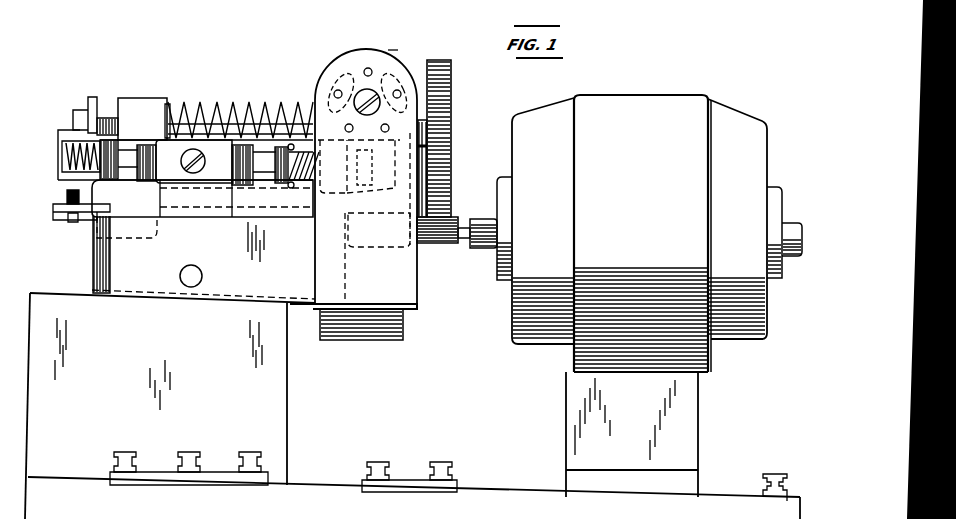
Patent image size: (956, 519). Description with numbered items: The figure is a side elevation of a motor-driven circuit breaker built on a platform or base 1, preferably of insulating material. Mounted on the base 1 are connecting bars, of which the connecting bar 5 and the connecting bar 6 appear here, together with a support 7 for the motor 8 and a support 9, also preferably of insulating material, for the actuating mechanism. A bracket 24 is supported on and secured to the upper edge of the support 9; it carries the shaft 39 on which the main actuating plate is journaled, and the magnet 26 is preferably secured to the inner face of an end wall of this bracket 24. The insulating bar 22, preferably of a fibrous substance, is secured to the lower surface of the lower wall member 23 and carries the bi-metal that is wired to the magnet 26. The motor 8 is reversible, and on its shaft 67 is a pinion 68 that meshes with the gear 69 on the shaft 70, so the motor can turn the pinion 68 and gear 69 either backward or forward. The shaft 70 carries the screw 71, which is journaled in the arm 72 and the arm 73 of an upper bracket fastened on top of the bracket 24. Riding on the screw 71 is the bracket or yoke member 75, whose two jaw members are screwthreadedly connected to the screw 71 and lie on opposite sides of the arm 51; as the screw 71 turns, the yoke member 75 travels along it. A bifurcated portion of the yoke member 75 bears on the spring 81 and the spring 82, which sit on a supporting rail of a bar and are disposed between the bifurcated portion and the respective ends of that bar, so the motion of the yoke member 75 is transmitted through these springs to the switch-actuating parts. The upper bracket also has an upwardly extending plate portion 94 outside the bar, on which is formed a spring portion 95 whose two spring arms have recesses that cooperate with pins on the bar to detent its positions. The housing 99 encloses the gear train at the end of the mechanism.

The platform or base 1 is at (520, 480).
The connecting bar 5 is at (206, 478).
The connecting bar 6 is at (398, 483).
The support 7 is at (693, 428).
The motor 8 is at (649, 233).
The support 9 is at (272, 410).
The insulating bar 22 is at (58, 216).
The lower wall member 23 is at (66, 200).
The bracket 24 is at (95, 238).
The magnet 26 is at (358, 344).
The shaft 39 is at (181, 275).
The arm 51 is at (133, 96).
The shaft 67 is at (470, 222).
The pinion 68 is at (452, 216).
The gear 69 is at (452, 80).
The shaft 70 is at (422, 120).
The screw 71 is at (248, 118).
The arm 72 is at (93, 98).
The arm 73 is at (404, 62).
The bracket or yoke member 75 is at (172, 108).
The spring 81 is at (65, 145).
The spring 82 is at (310, 193).
The plate portion 94 is at (175, 192).
The spring portion 95 is at (219, 185).
The gear housing 99 is at (330, 80).